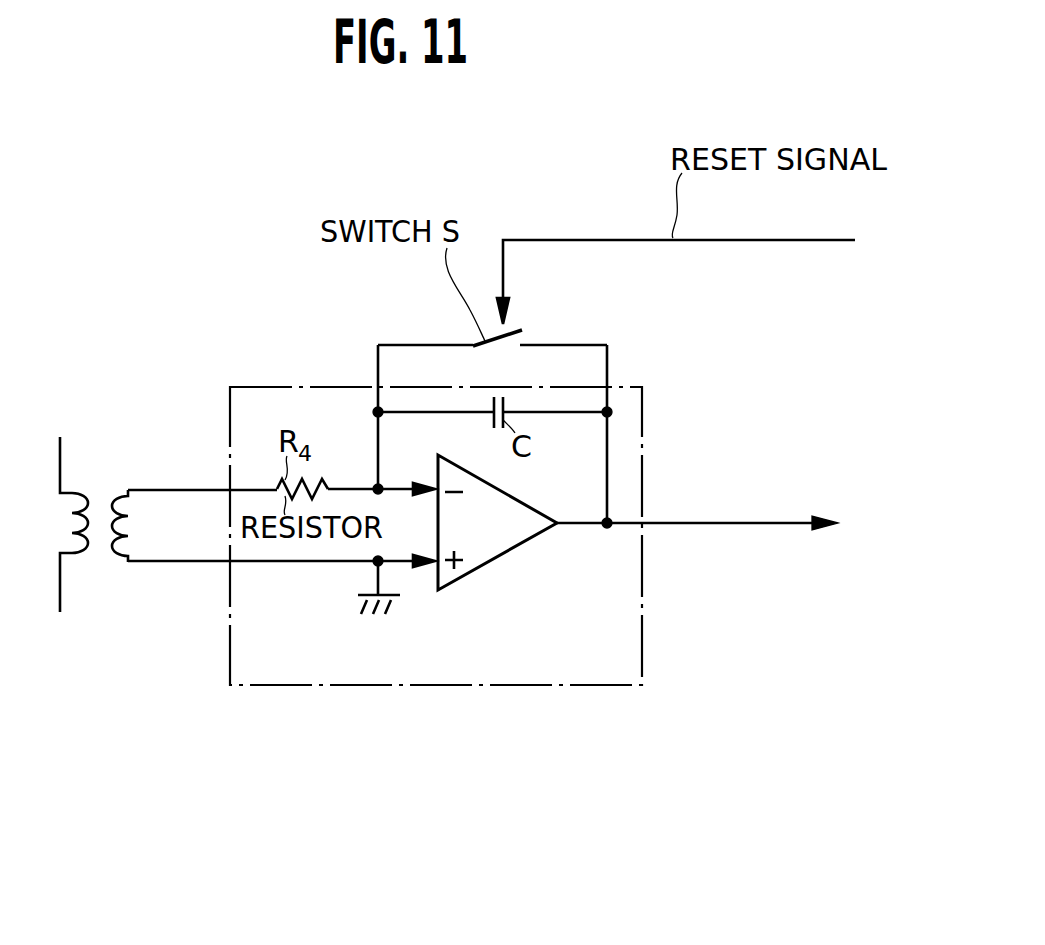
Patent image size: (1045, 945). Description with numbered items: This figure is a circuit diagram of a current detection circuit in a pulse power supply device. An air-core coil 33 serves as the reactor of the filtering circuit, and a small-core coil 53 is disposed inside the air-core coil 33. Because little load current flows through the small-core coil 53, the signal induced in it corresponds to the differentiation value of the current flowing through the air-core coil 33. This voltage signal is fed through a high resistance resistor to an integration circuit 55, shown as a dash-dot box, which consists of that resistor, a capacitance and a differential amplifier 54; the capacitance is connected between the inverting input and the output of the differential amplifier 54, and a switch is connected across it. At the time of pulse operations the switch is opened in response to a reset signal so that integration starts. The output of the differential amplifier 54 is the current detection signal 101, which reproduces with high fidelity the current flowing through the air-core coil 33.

The air-core coil 33 is at (85, 495).
The small-core coil 53 is at (120, 495).
The differential amplifier 54 is at (513, 552).
The integration circuit 55 is at (392, 688).
The current detection signal 101 is at (693, 520).